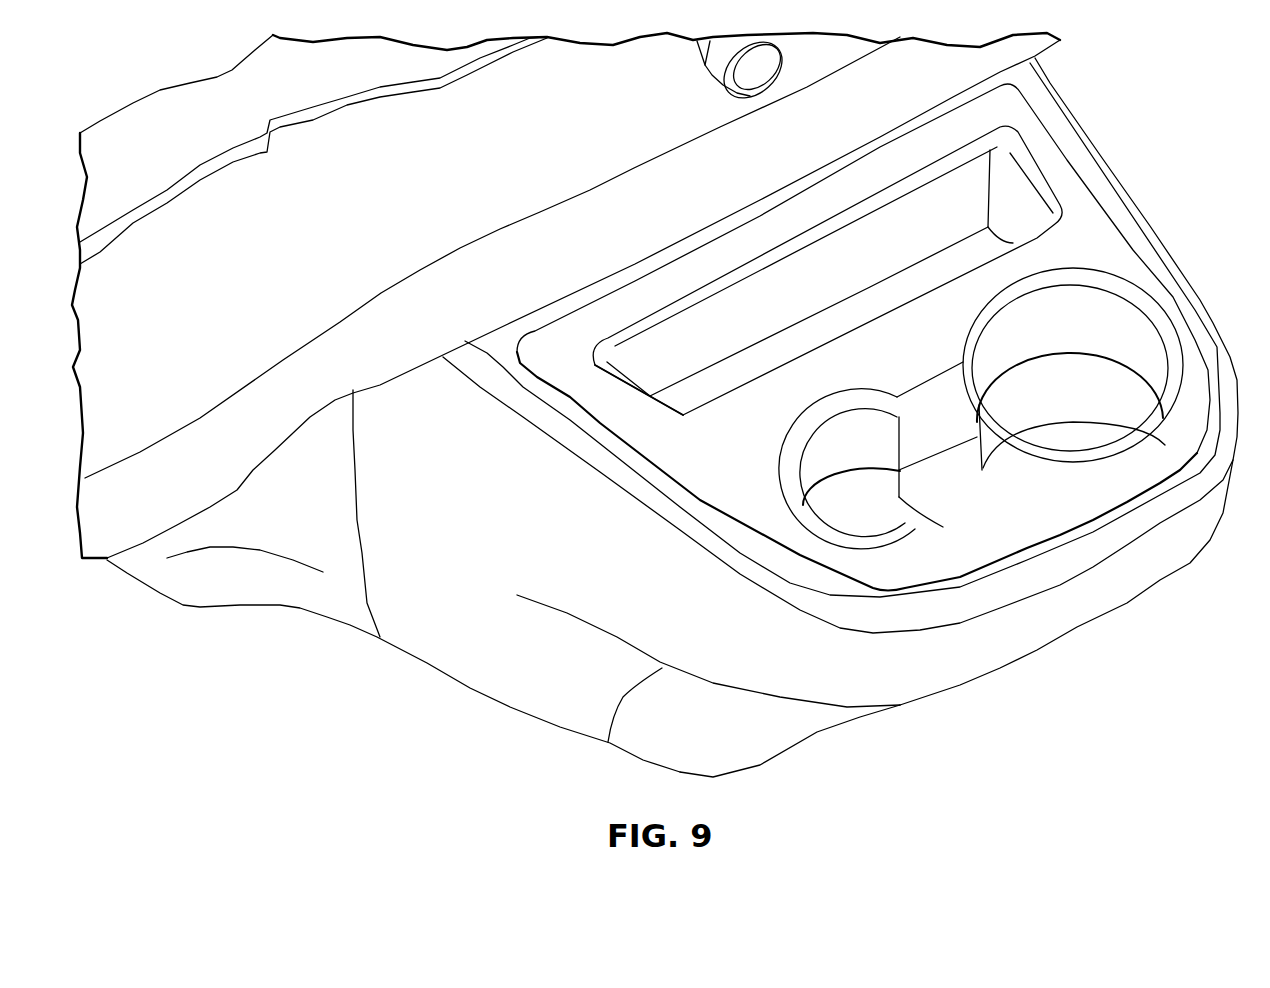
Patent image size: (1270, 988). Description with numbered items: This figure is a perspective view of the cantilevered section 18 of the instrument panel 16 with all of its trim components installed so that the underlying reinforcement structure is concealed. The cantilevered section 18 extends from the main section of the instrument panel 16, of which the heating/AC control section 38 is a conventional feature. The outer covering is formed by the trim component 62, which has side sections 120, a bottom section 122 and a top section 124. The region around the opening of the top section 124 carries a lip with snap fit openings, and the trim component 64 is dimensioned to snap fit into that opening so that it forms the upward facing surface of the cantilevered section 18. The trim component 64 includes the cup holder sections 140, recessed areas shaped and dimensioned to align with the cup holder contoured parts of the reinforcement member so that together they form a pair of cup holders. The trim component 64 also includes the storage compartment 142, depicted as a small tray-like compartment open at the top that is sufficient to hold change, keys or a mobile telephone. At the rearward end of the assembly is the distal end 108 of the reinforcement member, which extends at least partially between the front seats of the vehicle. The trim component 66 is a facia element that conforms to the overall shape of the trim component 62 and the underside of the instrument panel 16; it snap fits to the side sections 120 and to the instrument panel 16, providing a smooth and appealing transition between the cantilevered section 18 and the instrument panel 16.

The instrument panel 16 is at (372, 387).
The cantilevered section 18 is at (1128, 120).
The heating/AC control section 38 is at (702, 70).
The trim component 62 is at (817, 732).
The trim component 64 is at (1153, 273).
The trim component 66 is at (210, 600).
The distal end 108 is at (1077, 628).
The side sections 120 is at (470, 687).
The bottom section 122 is at (903, 702).
The top section 124 is at (1050, 83).
The cup holder sections 140 is at (1027, 347).
The storage compartment 142 is at (790, 283).